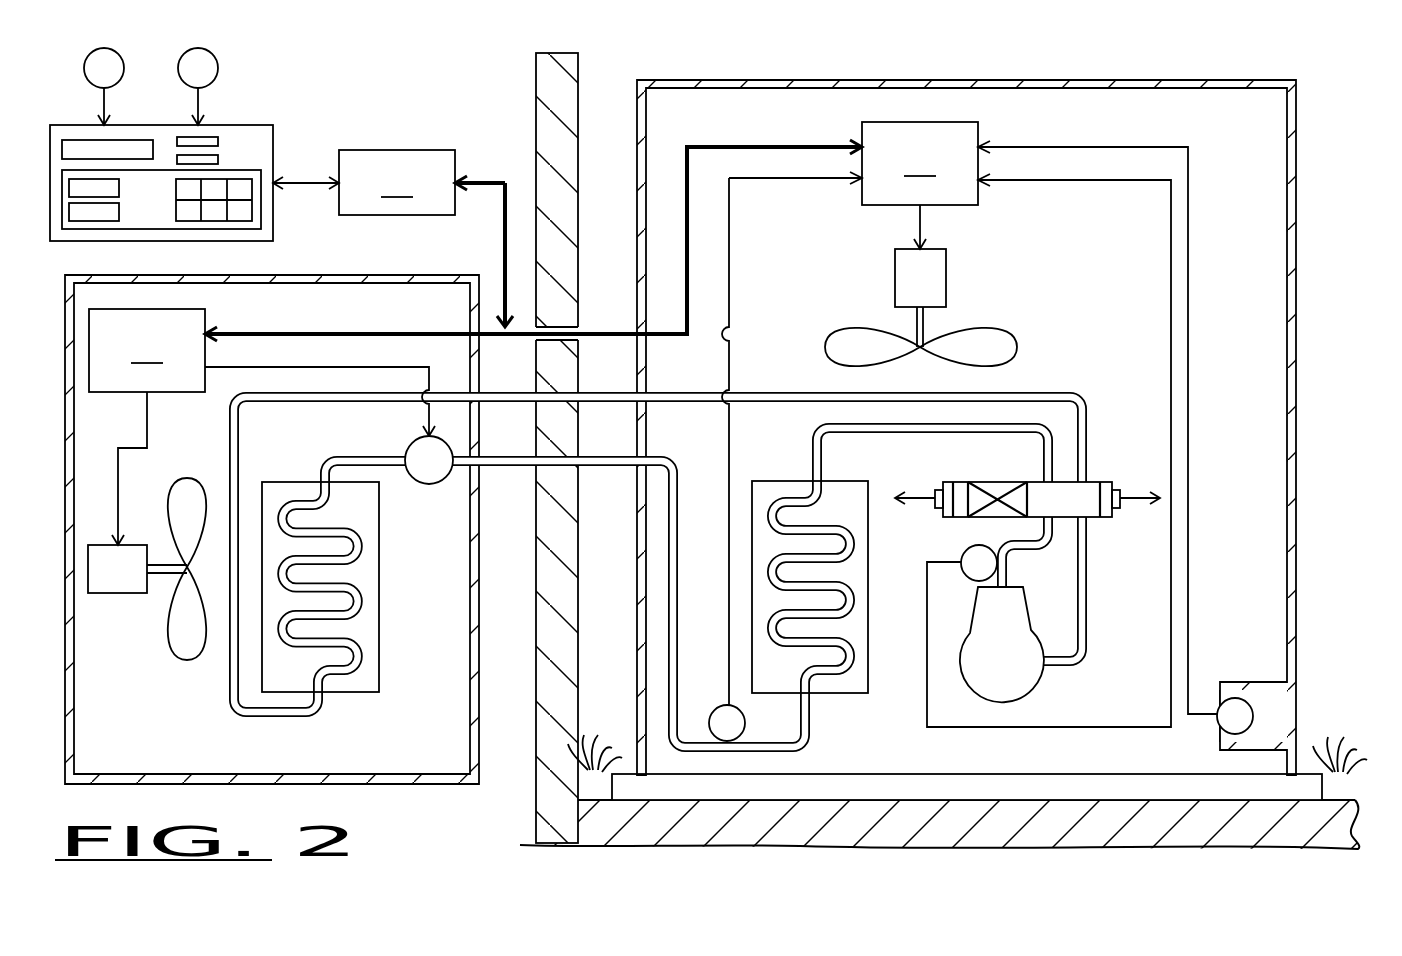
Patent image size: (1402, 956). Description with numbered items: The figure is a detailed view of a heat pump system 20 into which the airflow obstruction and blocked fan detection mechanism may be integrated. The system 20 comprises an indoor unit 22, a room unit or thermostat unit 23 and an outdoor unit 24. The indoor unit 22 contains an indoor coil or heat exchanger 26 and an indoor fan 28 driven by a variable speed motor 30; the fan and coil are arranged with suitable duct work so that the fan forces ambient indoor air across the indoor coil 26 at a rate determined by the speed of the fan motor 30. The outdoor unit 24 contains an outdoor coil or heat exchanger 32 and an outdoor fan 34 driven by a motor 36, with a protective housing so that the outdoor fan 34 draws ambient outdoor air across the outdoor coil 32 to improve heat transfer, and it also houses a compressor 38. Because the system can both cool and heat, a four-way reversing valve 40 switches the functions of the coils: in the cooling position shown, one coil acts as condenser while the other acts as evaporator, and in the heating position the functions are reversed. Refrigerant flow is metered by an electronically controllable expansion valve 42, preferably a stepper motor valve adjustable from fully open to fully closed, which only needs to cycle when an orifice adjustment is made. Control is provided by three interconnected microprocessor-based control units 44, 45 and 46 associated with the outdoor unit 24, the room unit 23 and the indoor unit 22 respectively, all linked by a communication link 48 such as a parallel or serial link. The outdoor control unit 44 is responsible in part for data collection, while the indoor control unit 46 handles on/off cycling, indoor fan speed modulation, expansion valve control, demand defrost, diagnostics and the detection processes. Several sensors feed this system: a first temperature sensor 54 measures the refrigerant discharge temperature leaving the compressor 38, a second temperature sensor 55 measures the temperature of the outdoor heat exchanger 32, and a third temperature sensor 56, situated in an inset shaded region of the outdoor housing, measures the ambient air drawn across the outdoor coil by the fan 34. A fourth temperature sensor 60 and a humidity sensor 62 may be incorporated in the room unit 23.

The heat pump system 20 is at (462, 96).
The indoor unit 22 is at (428, 275).
The room unit or thermostat unit 23 is at (273, 130).
The outdoor unit 24 is at (745, 79).
The indoor coil or heat exchanger 26 is at (360, 694).
The indoor fan 28 is at (182, 656).
The variable speed motor 30 is at (110, 594).
The outdoor coil or heat exchanger 32 is at (847, 695).
The outdoor fan 34 is at (1005, 347).
The motor 36 is at (946, 262).
The compressor 38 is at (1028, 686).
The four-way reversing valve 40 is at (1020, 482).
The electronically controllable expansion valve 42 is at (428, 486).
The outdoor control unit 44 is at (920, 163).
The control unit 45 is at (397, 182).
The indoor control unit 46 is at (147, 350).
The communication link 48 is at (393, 333).
The first temperature sensor 54 is at (962, 557).
The second temperature sensor 55 is at (720, 707).
The third temperature sensor 56 is at (1250, 718).
The fourth temperature sensor 60 is at (84, 74).
The humidity sensor 62 is at (218, 72).